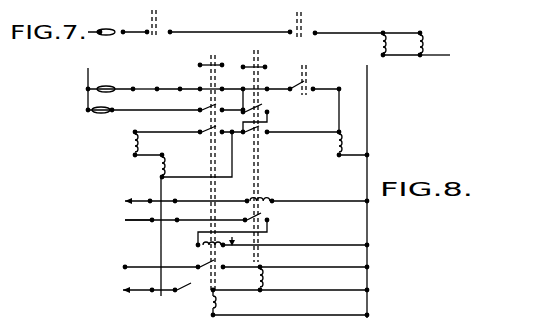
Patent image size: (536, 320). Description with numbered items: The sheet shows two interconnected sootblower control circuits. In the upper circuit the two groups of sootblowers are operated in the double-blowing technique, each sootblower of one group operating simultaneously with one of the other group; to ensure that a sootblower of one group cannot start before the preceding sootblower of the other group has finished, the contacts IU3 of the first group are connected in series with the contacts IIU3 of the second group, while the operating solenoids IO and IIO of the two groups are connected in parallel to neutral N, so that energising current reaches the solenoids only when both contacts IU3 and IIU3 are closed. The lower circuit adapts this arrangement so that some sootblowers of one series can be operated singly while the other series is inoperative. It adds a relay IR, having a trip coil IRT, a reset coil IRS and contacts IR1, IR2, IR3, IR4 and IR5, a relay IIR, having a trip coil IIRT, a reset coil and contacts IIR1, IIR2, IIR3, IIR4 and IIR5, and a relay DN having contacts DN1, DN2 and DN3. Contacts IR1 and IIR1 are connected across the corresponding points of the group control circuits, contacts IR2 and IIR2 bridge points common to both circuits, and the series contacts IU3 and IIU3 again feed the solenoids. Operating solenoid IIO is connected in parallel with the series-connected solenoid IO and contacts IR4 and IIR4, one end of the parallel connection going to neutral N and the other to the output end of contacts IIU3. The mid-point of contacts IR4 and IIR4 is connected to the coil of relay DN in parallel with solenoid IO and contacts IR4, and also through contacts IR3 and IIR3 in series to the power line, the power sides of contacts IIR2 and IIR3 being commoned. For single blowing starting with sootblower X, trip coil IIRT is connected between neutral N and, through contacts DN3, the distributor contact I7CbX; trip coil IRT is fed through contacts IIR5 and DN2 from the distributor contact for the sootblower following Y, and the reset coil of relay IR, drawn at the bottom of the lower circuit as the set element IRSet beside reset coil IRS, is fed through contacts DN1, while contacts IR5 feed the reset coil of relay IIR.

In FIG. 7, the contacts IU3 is at (180, 21).
In FIG. 8, the contacts IU3 is at (155, 99).
In FIG. 7, the contacts IIU3 is at (323, 21).
In FIG. 8, the contacts IIU3 is at (319, 80).
In FIG. 7, the operating solenoid IO is at (380, 34).
In FIG. 8, the operating solenoid IO is at (128, 155).
In FIG. 7, the operating solenoid IIO is at (421, 34).
In FIG. 8, the operating solenoid IIO is at (350, 143).
In FIG. 7, the neutral N is at (444, 54).
In FIG. 8, the neutral N is at (376, 191).
In FIG. 8, the relay IR is at (217, 164).
In FIG. 8, the relay IIR is at (259, 150).
In FIG. 8, the contacts IR1 is at (218, 65).
In FIG. 8, the contacts IR2 is at (180, 68).
In FIG. 8, the contacts IR3 is at (196, 117).
In FIG. 8, the contacts IR4 is at (200, 140).
In FIG. 8, the contacts IR5 is at (220, 275).
In FIG. 8, the contacts IIR1 is at (300, 82).
In FIG. 8, the contacts IIR2 is at (270, 101).
In FIG. 8, the contacts IIR3 is at (273, 121).
In FIG. 8, the contacts IIR4 is at (271, 139).
In FIG. 8, the contacts IIR5 is at (259, 221).
In FIG. 8, the trip coil IRT is at (201, 245).
In FIG. 8, the trip coil IIRT is at (280, 201).
In FIG. 8, the reset coil IRS is at (235, 279).
In FIG. 8, the first RS relay set coil IRSet is at (196, 303).
In FIG. 8, the relay DN is at (143, 302).
In FIG. 8, the contacts DN1 is at (160, 280).
In FIG. 8, the contacts DN2 is at (192, 208).
In FIG. 8, the contacts DN3 is at (174, 180).
In FIG. 8, the contact 7CbX on distributor ID I7CbX is at (112, 190).